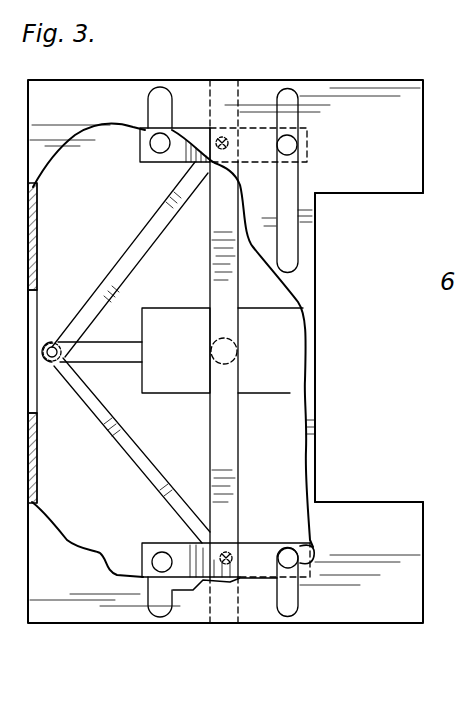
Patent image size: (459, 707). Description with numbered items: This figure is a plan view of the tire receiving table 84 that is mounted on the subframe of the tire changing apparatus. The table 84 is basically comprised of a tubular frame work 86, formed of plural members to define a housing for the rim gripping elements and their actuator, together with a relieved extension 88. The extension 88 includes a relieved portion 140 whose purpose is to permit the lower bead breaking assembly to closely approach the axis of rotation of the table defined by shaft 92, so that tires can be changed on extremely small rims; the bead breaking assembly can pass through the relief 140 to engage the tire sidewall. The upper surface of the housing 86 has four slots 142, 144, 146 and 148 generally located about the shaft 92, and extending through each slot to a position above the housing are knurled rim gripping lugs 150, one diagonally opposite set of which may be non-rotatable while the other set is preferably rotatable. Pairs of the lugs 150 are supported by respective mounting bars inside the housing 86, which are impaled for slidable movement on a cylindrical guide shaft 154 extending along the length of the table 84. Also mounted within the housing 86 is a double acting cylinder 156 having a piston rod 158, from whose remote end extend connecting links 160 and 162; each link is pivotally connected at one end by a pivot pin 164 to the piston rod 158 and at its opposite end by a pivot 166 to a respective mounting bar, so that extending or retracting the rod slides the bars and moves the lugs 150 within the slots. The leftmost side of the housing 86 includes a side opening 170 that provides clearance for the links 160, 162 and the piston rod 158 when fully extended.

The tire receiving table 84 is at (77, 627).
The tubular frame work 86 is at (195, 600).
The relieved extension 88 is at (366, 92).
The shaft 92 is at (238, 346).
The relieved portion 140 is at (314, 350).
The slot 142 is at (165, 108).
The slot 144 is at (292, 222).
The slot 146 is at (150, 600).
The slot 148 is at (297, 590).
The knurled rim gripping lugs 150 is at (152, 147).
The cylindrical guide shaft 154 is at (210, 278).
The double acting cylinder 156 is at (288, 385).
The piston rod 158 is at (113, 350).
The connecting link 160 is at (145, 240).
The connecting link 162 is at (147, 470).
The pivot pin 164 is at (53, 345).
The pivot 166 is at (228, 130).
The side opening 170 is at (48, 300).